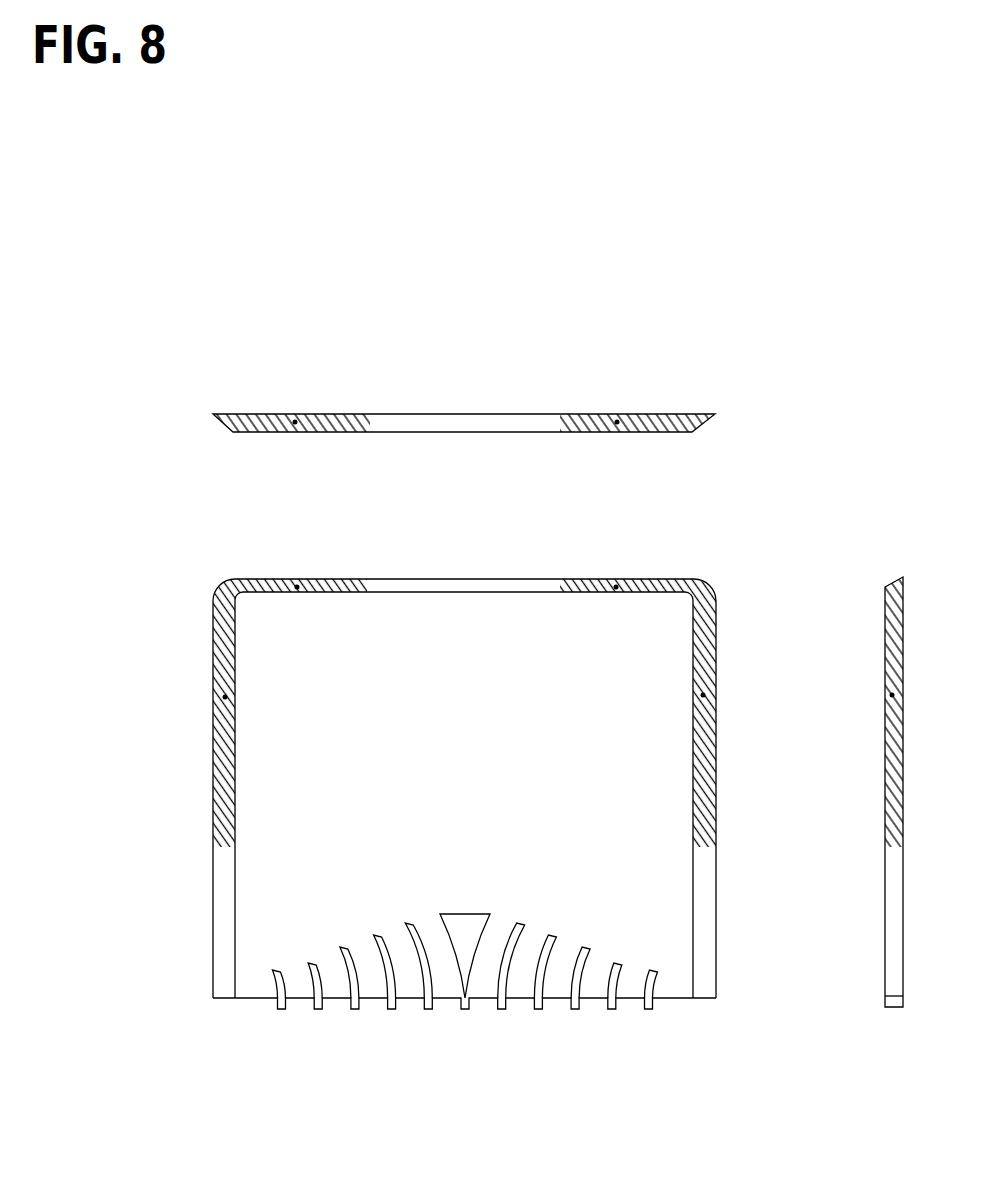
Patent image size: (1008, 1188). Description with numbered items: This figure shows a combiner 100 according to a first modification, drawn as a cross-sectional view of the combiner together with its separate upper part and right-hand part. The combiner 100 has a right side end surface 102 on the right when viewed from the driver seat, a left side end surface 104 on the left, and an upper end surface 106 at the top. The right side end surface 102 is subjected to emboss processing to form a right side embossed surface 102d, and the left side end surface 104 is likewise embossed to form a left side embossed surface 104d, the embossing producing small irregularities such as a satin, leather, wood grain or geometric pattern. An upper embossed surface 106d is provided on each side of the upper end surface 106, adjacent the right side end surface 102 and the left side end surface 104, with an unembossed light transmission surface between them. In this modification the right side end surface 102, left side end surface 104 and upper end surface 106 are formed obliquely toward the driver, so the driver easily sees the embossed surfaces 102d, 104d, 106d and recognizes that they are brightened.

The combiner 100 is at (647, 315).
The right side end surface 102 is at (727, 441).
The right side embossed surface 102d is at (892, 695).
The left side end surface 104 is at (212, 450).
The left side embossed surface 104d is at (225, 697).
The upper end surface 106 is at (482, 453).
The upper embossed surface 106d is at (295, 422).